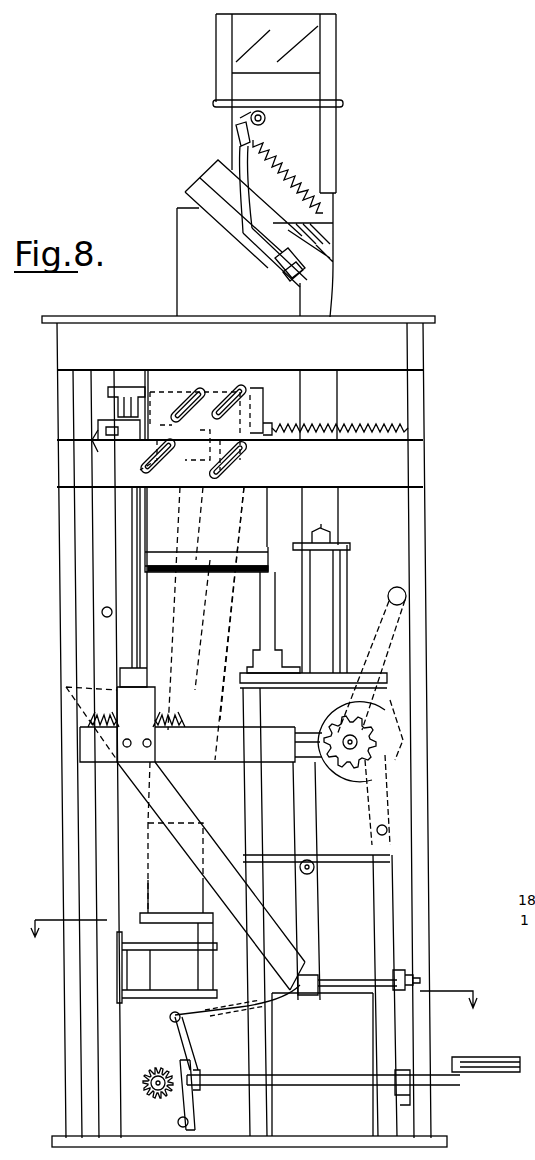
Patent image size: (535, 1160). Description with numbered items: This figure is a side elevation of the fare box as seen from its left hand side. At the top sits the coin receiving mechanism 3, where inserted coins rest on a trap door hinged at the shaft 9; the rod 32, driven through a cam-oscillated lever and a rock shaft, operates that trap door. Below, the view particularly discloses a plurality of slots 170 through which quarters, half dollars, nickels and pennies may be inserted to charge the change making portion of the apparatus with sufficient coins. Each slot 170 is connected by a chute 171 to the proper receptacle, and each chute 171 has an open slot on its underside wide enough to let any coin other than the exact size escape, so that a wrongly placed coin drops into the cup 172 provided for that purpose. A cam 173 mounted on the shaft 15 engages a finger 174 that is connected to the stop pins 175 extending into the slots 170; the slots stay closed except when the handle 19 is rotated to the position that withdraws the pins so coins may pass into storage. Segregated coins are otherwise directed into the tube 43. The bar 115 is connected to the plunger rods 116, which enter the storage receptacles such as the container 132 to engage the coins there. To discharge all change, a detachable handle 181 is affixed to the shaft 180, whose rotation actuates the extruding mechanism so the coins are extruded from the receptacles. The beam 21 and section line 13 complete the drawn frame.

The coin receiving mechanism 3 is at (333, 77).
The shaft 9 is at (265, 118).
The rod 32 is at (276, 263).
The stop pins 175 is at (176, 400).
The finger 174 is at (98, 424).
The cam 173 is at (97, 449).
The slots 170 is at (246, 455).
The cup 172 is at (180, 553).
The shaft 15 is at (138, 612).
The chute 171 is at (217, 623).
The tube 43 is at (343, 594).
The handle 19 is at (406, 596).
The beam 21 is at (88, 722).
The container 132 is at (150, 876).
The section line 13 is at (250, 975).
The plunger rods 116 is at (236, 1012).
The bar 115 is at (323, 995).
The shaft 180 is at (348, 1072).
The detachable handle 181 is at (482, 1068).